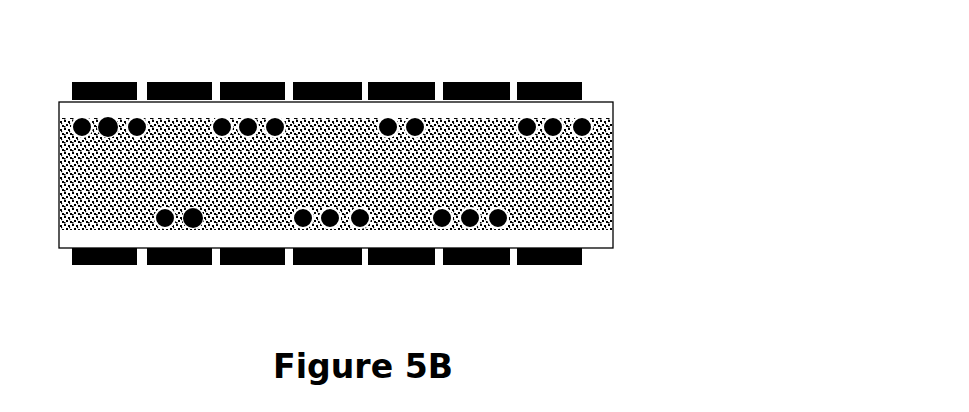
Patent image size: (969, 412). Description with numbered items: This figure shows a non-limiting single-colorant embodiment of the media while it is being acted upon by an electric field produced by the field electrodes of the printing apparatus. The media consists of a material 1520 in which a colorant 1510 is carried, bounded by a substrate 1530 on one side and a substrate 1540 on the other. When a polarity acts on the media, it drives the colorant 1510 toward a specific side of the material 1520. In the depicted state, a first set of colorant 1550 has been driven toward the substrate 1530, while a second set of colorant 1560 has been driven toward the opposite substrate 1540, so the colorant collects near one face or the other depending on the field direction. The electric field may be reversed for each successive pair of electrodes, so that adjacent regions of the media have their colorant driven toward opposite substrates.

The colorant 1510 is at (594, 128).
The material 1520 is at (542, 215).
The substrate 1530 is at (495, 109).
The substrate 1540 is at (289, 232).
The first set of colorant 1550 is at (103, 136).
The second set of colorant 1560 is at (198, 231).